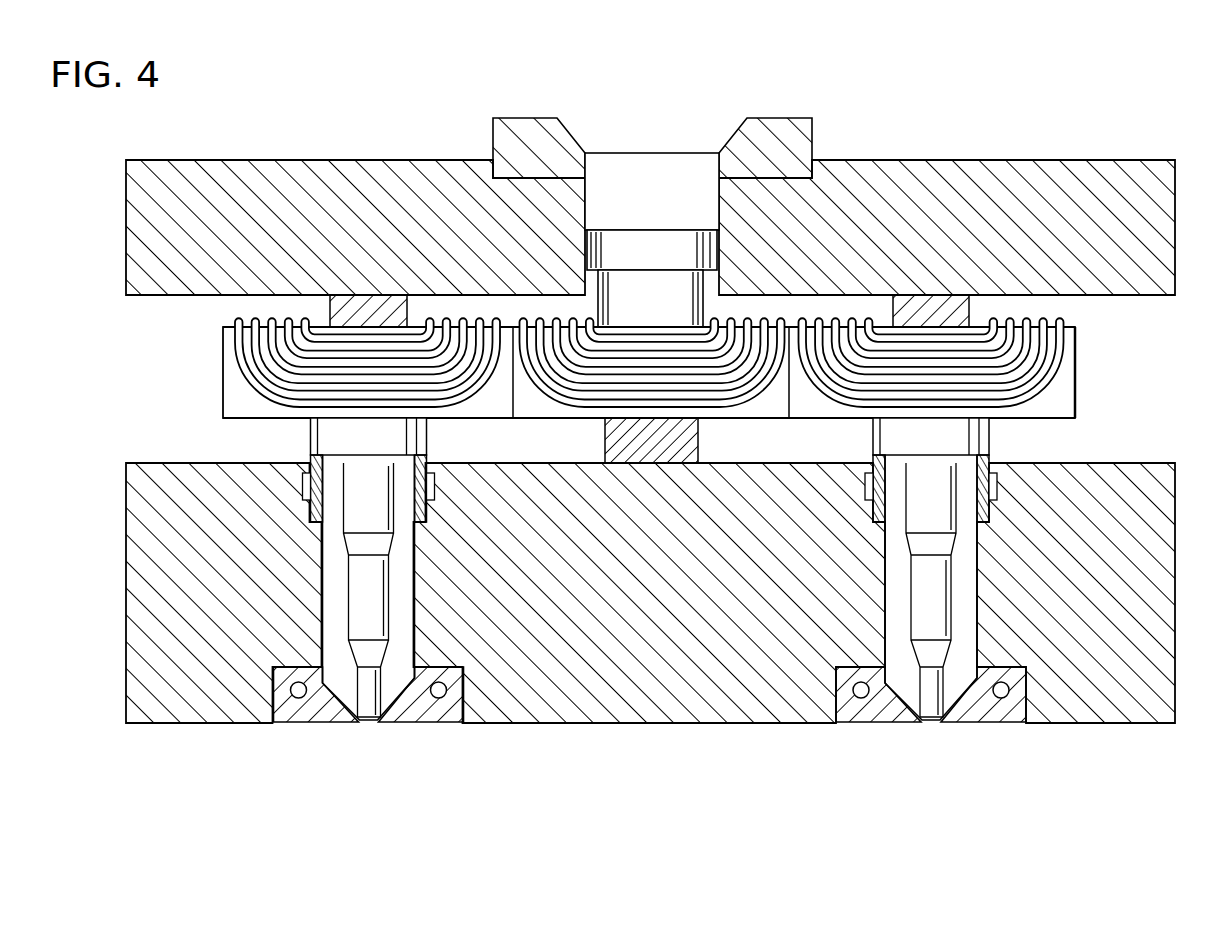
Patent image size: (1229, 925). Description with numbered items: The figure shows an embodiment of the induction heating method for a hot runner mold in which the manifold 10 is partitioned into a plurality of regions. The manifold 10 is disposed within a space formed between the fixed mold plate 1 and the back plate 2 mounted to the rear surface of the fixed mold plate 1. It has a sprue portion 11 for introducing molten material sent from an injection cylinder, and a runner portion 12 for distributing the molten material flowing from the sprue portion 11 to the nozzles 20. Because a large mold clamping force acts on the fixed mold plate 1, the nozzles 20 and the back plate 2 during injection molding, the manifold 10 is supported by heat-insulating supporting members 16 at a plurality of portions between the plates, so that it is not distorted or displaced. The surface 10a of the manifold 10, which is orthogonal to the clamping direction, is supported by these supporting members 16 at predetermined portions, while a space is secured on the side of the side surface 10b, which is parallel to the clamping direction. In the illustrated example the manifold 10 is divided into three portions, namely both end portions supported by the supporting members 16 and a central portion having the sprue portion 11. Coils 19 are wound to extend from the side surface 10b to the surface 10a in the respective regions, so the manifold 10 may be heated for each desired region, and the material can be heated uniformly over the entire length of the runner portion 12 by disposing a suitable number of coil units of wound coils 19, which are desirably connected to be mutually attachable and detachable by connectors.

The fixed mold plate 1 is at (188, 692).
The back plate 2 is at (297, 200).
The manifold 10 is at (797, 320).
The surface 10a is at (551, 327).
The side surface 10b is at (1065, 350).
The sprue portion 11 is at (668, 250).
The runner portion 12 is at (505, 335).
The supporting members 16 is at (330, 308).
The coils 19 is at (246, 384).
The nozzles 20 is at (353, 617).